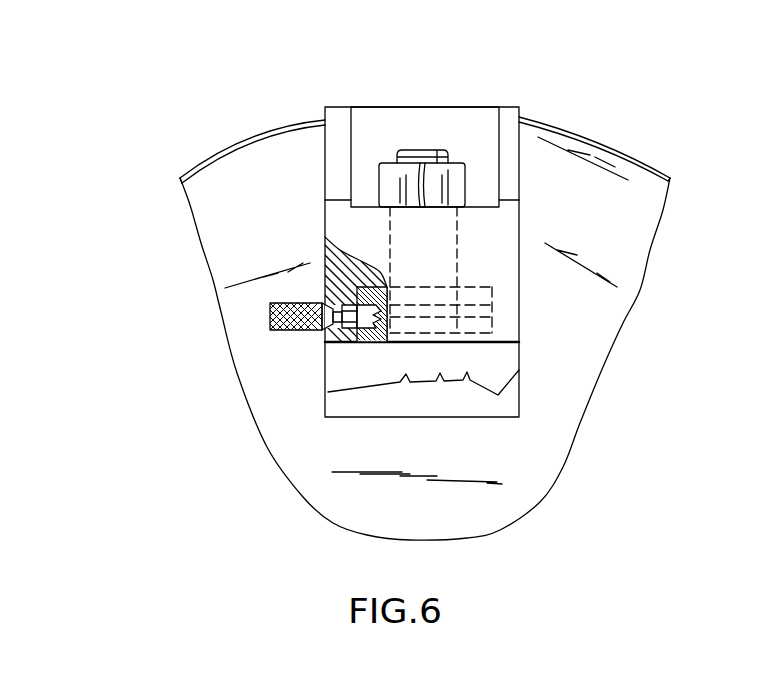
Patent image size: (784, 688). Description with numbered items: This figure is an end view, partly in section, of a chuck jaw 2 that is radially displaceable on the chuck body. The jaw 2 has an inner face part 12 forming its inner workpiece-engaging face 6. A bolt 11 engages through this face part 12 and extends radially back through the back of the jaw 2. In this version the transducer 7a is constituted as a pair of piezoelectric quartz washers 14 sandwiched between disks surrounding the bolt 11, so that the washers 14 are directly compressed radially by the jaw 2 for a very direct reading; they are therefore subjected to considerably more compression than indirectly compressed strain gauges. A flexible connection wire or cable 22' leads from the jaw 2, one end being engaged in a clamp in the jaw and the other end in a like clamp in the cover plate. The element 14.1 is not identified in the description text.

The jaw 2 is at (505, 283).
The inner workpiece-engaging face 6 is at (453, 390).
The transducer 7a is at (348, 333).
The bolt 11 is at (435, 247).
The inner face part 12 is at (503, 362).
The piezoelectric quartz washers 14 is at (495, 320).
The support block 14.1 is at (358, 293).
The flexible connection wire or cable 22' is at (274, 387).